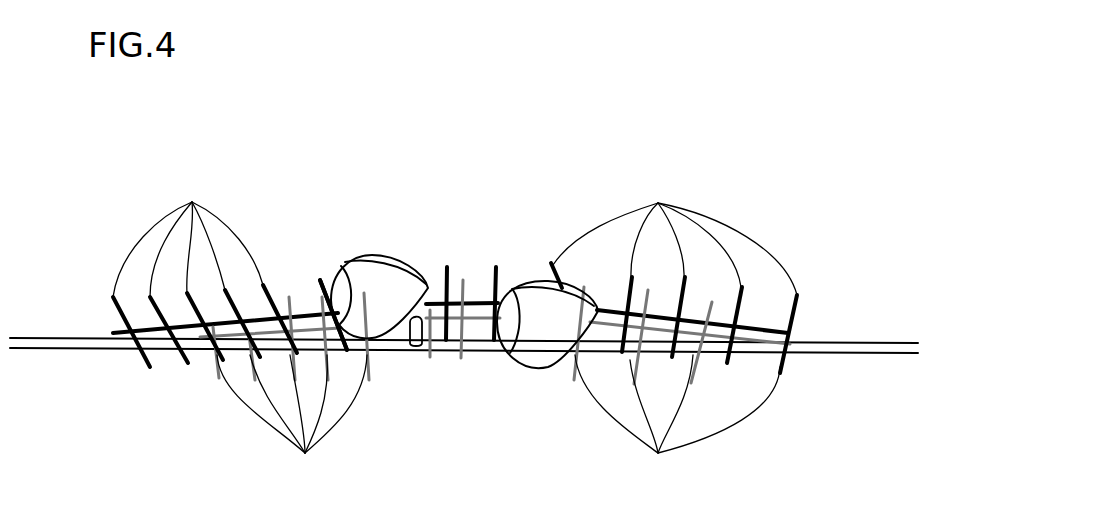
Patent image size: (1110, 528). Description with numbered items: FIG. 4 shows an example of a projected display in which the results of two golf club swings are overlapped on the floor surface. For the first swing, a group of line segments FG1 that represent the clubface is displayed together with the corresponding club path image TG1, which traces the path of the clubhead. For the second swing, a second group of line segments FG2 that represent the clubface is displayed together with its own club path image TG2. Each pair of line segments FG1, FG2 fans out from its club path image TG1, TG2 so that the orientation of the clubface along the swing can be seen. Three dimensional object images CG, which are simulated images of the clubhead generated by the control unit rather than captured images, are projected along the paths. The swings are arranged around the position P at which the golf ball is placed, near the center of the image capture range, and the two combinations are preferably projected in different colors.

The group of line segments representing a clubface (first swing) FG1 is at (455, 273).
The group of line segments representing a clubface (second swing) FG2 is at (498, 422).
The club path image (first swing) TG1 is at (295, 312).
The club path image (second swing) TG2 is at (478, 325).
The three dimensional object image CG is at (373, 253).
The position P is at (416, 347).